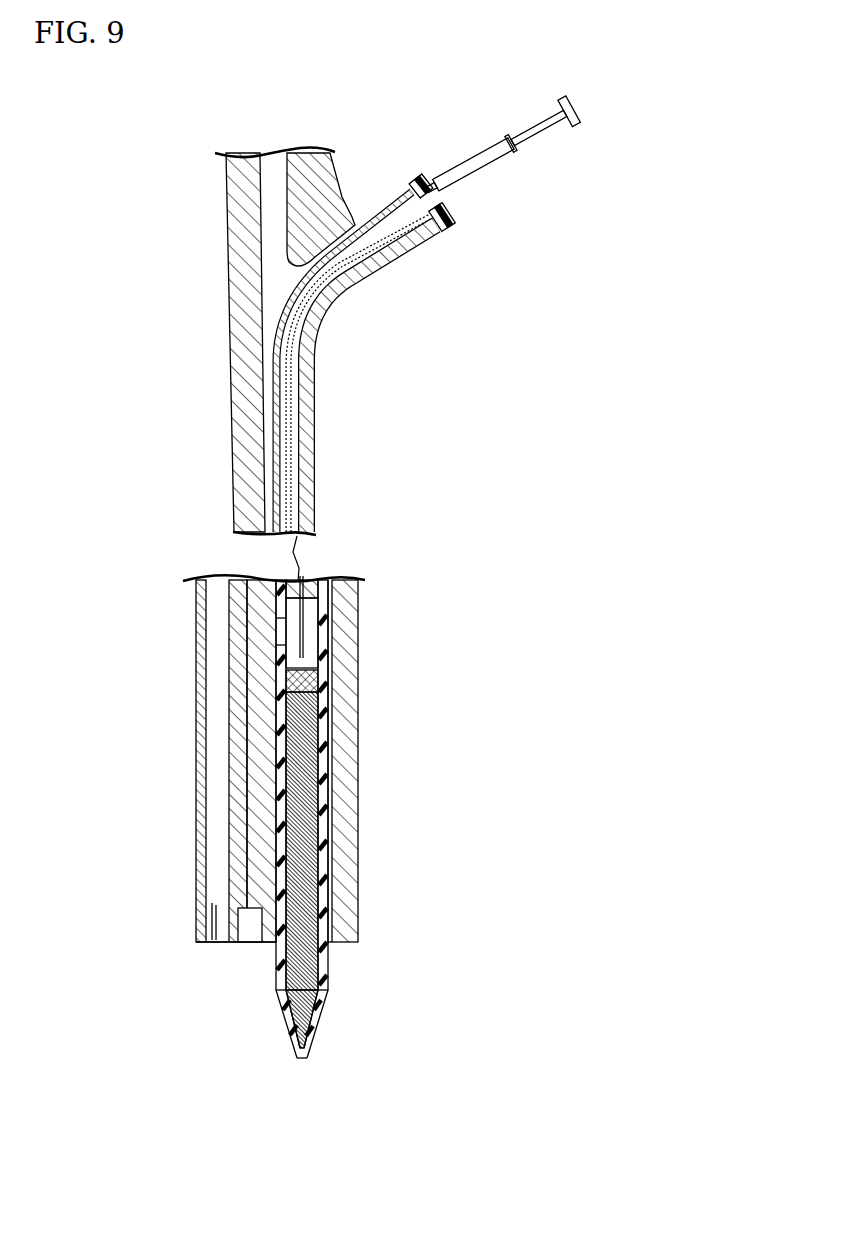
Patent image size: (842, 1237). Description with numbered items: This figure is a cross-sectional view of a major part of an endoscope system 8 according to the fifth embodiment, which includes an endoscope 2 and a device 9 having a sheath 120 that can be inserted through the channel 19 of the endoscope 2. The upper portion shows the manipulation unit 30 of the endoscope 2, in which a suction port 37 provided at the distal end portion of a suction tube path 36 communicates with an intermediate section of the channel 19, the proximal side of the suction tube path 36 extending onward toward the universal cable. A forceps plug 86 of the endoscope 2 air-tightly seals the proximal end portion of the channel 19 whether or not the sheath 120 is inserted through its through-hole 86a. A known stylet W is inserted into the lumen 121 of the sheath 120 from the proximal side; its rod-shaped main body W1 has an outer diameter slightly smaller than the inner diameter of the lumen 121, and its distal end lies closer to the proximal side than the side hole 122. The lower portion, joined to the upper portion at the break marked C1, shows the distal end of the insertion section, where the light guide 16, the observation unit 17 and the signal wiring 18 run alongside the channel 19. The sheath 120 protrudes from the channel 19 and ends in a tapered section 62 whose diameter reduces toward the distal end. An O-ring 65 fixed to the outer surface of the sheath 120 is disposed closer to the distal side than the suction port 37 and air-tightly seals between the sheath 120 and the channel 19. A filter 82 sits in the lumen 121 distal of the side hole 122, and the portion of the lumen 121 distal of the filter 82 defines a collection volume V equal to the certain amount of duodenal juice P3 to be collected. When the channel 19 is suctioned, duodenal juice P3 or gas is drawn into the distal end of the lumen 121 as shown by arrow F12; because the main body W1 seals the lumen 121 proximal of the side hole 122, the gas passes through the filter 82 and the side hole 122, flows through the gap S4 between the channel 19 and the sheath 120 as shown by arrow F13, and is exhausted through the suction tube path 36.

The endoscope 2 is at (186, 150).
The endoscope system 8 is at (364, 133).
The device 9 is at (450, 148).
The stylet W is at (592, 102).
The rod-shaped main body W1 is at (546, 132).
The manipulation unit 30 is at (334, 172).
The suction tube path 36 is at (268, 212).
The suction port 37 is at (258, 273).
The forceps plug 86 is at (449, 232).
The through-hole 86a is at (448, 203).
The gap S4 is at (270, 508).
The connection C1 is at (296, 552).
The arrow F13 is at (268, 605).
The side hole 122 is at (300, 633).
The filter 82 is at (328, 684).
The O-ring 65 is at (283, 713).
The sheath 120 is at (322, 800).
The signal wiring 18 is at (250, 876).
The channel 19 is at (336, 858).
The duodenal juice P3 is at (318, 912).
The collection volume V is at (325, 905).
The light guide 16 is at (214, 946).
The observation unit 17 is at (250, 946).
The lumen 121 is at (286, 986).
The tapered section 62 is at (319, 1020).
The arrow F12 is at (302, 992).